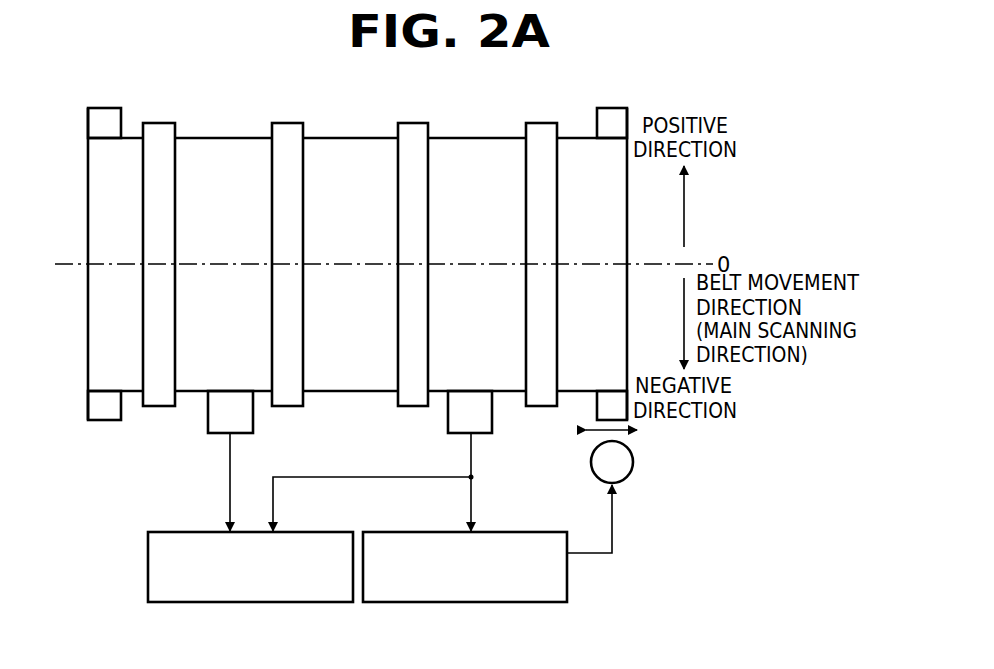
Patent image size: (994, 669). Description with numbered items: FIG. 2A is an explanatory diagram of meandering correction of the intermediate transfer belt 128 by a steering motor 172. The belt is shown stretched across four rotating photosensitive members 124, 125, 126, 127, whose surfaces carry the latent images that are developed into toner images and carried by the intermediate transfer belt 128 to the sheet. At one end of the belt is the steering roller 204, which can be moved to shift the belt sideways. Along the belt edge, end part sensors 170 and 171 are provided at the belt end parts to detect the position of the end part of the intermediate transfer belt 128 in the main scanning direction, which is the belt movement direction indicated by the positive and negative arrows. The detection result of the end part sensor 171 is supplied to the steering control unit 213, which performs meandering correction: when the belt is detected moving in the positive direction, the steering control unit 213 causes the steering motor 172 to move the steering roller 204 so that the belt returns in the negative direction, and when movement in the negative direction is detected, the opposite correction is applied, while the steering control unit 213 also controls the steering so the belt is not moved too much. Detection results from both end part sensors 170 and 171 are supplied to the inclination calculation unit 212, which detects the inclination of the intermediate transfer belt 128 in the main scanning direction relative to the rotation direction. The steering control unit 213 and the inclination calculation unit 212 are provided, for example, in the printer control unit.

The photosensitive member 124 is at (543, 123).
The photosensitive member 125 is at (413, 123).
The photosensitive member 126 is at (287, 123).
The photosensitive member 127 is at (158, 123).
The intermediate transfer belt 128 is at (229, 138).
The steering roller 204 is at (610, 107).
The end part sensor 170 is at (253, 422).
The end part sensor 171 is at (492, 422).
The steering motor 172 is at (630, 474).
The inclination calculation unit 212 is at (281, 602).
The steering control unit 213 is at (502, 602).